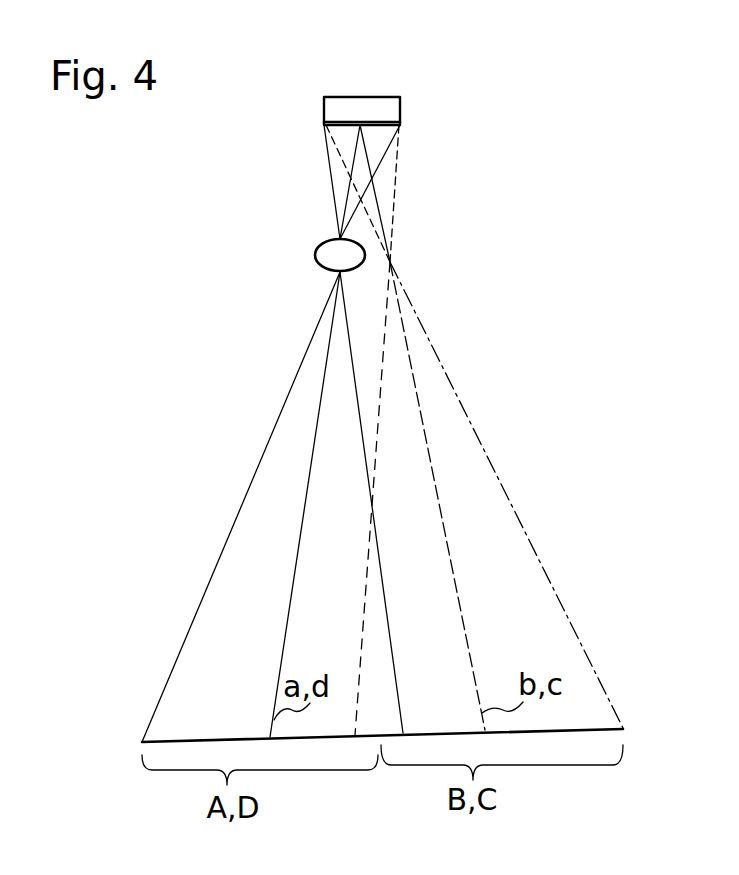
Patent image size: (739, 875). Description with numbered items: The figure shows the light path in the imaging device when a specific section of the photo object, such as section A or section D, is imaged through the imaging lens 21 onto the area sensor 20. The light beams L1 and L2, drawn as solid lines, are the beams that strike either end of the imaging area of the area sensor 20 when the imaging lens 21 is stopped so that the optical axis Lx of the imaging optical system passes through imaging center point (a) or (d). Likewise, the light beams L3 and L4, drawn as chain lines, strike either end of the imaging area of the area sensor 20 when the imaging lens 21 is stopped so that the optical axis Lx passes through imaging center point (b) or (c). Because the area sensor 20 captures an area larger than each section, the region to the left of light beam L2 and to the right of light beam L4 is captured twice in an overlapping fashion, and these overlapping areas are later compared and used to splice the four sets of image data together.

The area sensor 20 is at (379, 97).
The imaging lens 21 is at (315, 253).
The light beam L1 is at (180, 640).
The light beam L2 is at (395, 670).
The light beam L3 is at (569, 620).
The light beam L4 is at (364, 617).
The optical axis Lx is at (279, 677).